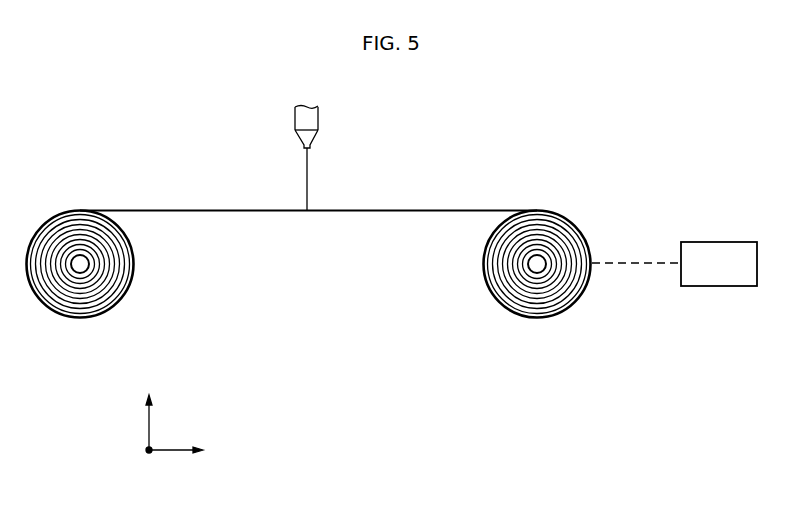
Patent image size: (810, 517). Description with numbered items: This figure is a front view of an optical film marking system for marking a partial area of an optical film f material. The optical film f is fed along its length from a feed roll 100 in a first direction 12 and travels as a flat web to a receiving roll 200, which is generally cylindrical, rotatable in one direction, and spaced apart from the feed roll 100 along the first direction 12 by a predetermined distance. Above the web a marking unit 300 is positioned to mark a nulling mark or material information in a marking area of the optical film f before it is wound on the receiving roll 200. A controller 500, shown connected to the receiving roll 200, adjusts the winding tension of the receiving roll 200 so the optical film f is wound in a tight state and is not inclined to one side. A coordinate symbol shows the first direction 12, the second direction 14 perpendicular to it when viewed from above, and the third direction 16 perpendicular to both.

The feed roll 100 is at (80, 266).
The receiving roll 200 is at (537, 266).
The marking unit 300 is at (342, 111).
The controller 500 is at (718, 242).
The optical film f is at (415, 210).
The first direction 12 is at (190, 451).
The second direction 14 is at (146, 454).
The third direction 16 is at (153, 409).